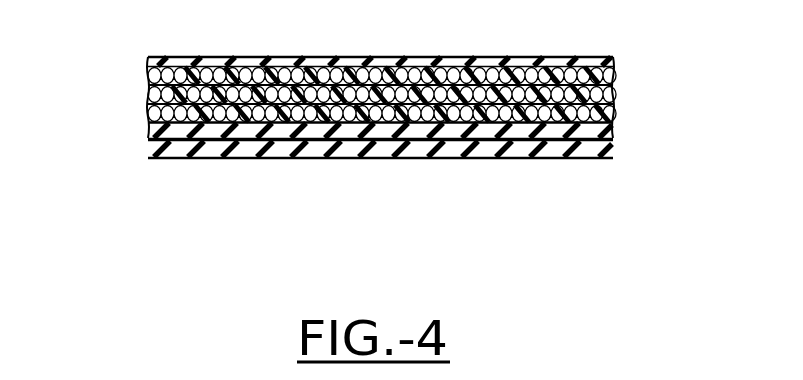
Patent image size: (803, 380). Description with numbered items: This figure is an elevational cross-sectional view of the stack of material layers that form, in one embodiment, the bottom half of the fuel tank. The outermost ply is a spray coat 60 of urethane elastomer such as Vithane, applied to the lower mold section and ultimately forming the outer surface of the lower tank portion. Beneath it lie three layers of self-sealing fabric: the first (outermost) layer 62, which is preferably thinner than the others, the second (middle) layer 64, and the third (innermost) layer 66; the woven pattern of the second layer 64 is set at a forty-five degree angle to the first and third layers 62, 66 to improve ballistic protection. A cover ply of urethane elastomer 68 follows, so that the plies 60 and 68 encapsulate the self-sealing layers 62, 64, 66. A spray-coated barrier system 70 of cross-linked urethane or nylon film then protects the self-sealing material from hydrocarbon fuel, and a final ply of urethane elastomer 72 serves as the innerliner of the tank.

The spray coat of urethane elastomer 60 is at (352, 57).
The first (outermost) layer of self-sealing fabric 62 is at (148, 82).
The second (middle) layer of self-sealing fabric 64 is at (148, 95).
The third (innermost) layer of self-sealing fabric 66 is at (148, 117).
The cover ply of urethane elastomer 68 is at (614, 126).
The barrier system 70 is at (353, 140).
The final ply of urethane elastomer 72 is at (483, 158).